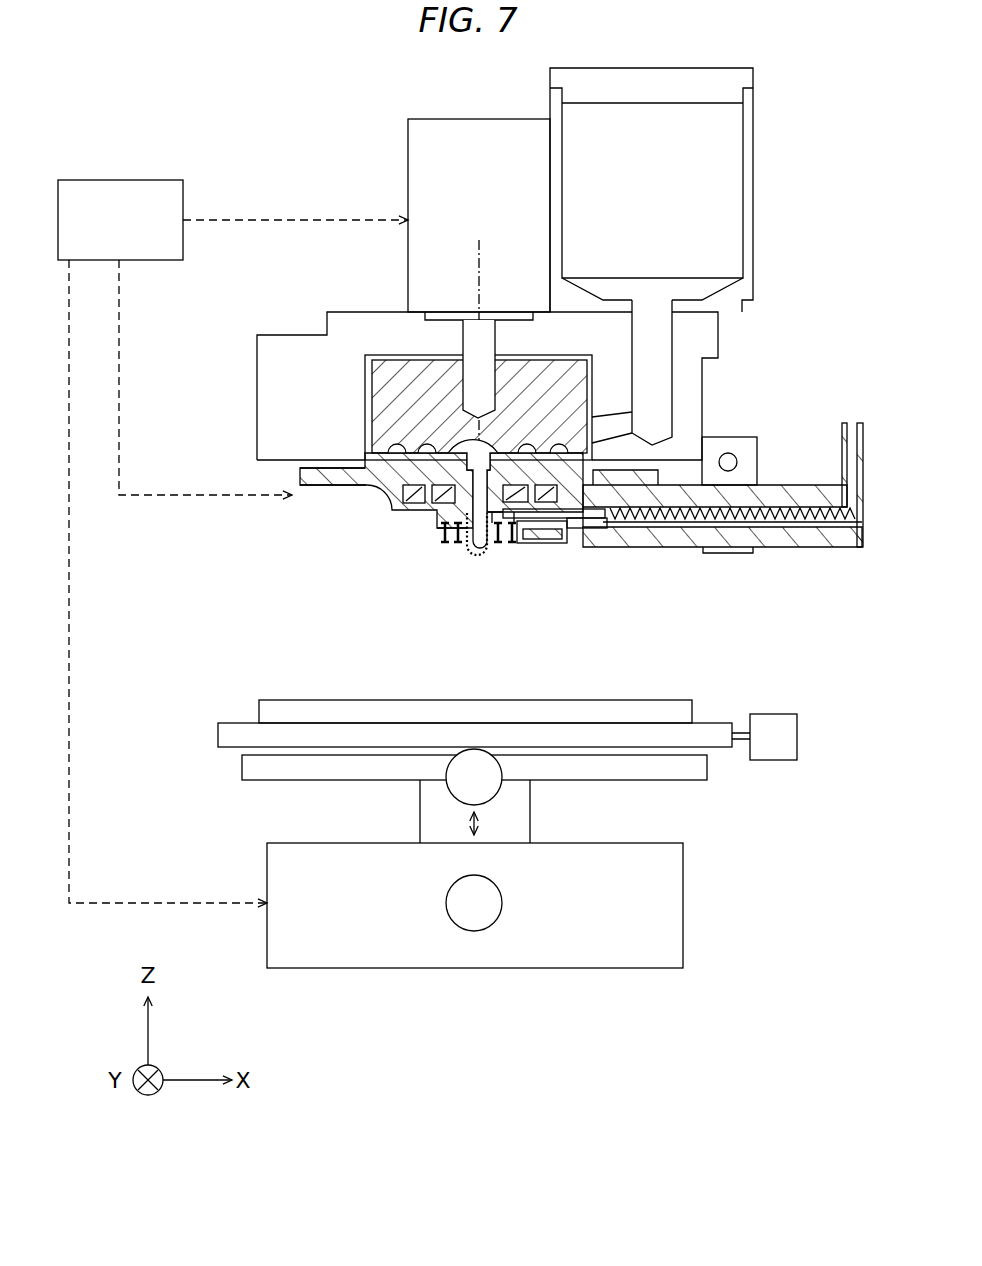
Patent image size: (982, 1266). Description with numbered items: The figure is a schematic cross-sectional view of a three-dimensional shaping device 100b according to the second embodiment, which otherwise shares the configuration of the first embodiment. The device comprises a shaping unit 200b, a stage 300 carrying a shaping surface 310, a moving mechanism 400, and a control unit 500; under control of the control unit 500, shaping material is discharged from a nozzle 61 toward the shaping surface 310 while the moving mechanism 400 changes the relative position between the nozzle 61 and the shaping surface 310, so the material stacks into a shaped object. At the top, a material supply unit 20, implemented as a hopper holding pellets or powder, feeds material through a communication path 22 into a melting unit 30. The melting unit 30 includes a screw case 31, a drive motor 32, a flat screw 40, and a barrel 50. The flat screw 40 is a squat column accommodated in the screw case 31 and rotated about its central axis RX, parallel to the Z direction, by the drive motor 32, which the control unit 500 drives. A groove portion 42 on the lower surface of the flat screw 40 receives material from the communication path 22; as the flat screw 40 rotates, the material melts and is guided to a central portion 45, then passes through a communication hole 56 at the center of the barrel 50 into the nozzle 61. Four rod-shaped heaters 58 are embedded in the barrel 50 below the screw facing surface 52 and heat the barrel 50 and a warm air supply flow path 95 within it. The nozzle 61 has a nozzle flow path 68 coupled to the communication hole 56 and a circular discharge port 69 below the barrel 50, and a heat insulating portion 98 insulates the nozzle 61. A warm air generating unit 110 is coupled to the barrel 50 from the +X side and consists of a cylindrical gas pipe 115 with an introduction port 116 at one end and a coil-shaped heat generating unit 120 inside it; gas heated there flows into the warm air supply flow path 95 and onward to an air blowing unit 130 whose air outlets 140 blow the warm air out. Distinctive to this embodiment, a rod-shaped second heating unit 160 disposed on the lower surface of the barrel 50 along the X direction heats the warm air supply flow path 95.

The three-dimensional shaping device 100b is at (155, 118).
The shaping unit 200b is at (282, 137).
The material supply unit 20 is at (757, 180).
The communication path 22 is at (652, 378).
The melting unit 30 is at (205, 312).
The screw case 31 is at (397, 312).
The drive motor 32 is at (408, 147).
The central axis RX is at (479, 253).
The flat screw 40 is at (410, 388).
The groove portion 42 is at (385, 462).
The central portion 45 is at (440, 440).
The barrel 50 is at (347, 480).
The screw facing surface 52 is at (470, 452).
The communication hole 56 is at (648, 527).
The heater 58 is at (445, 497).
The nozzle 61 is at (470, 549).
The nozzle flow path 68 is at (467, 540).
The discharge port 69 is at (478, 548).
The warm air supply flow path 95 is at (518, 540).
The heat insulating portion 98 is at (488, 543).
The warm air generating unit 110 is at (763, 590).
The gas pipe 115 is at (755, 522).
The introduction port 116 is at (858, 420).
The heat generating unit 120 is at (770, 527).
The air blowing unit 130 is at (405, 597).
The air outlet 140 is at (435, 548).
The second heating unit 160 is at (557, 542).
The stage 300 is at (727, 683).
The shaping surface 310 is at (627, 700).
The moving mechanism 400 is at (732, 825).
The control unit 500 is at (97, 180).